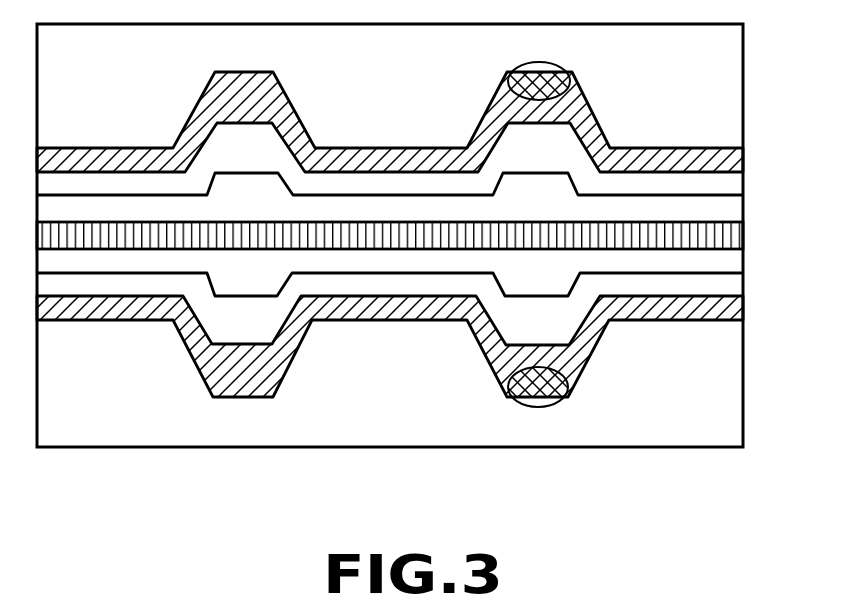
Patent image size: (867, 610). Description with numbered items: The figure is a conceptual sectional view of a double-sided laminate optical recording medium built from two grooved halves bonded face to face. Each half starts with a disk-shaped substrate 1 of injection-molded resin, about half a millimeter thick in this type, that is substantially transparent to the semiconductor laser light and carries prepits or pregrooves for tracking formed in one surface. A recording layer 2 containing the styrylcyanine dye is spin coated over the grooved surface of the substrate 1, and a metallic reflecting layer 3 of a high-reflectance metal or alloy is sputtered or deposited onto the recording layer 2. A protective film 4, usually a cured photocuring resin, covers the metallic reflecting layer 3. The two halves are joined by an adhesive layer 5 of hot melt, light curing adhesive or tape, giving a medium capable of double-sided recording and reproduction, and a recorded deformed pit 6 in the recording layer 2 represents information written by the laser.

The substrate 1 is at (732, 53).
The recording layer 2 is at (743, 162).
The metallic reflecting layer 3 is at (732, 187).
The protective film 4 is at (733, 210).
The adhesive layer 5 is at (733, 240).
The recorded deformed pit 6 is at (547, 402).